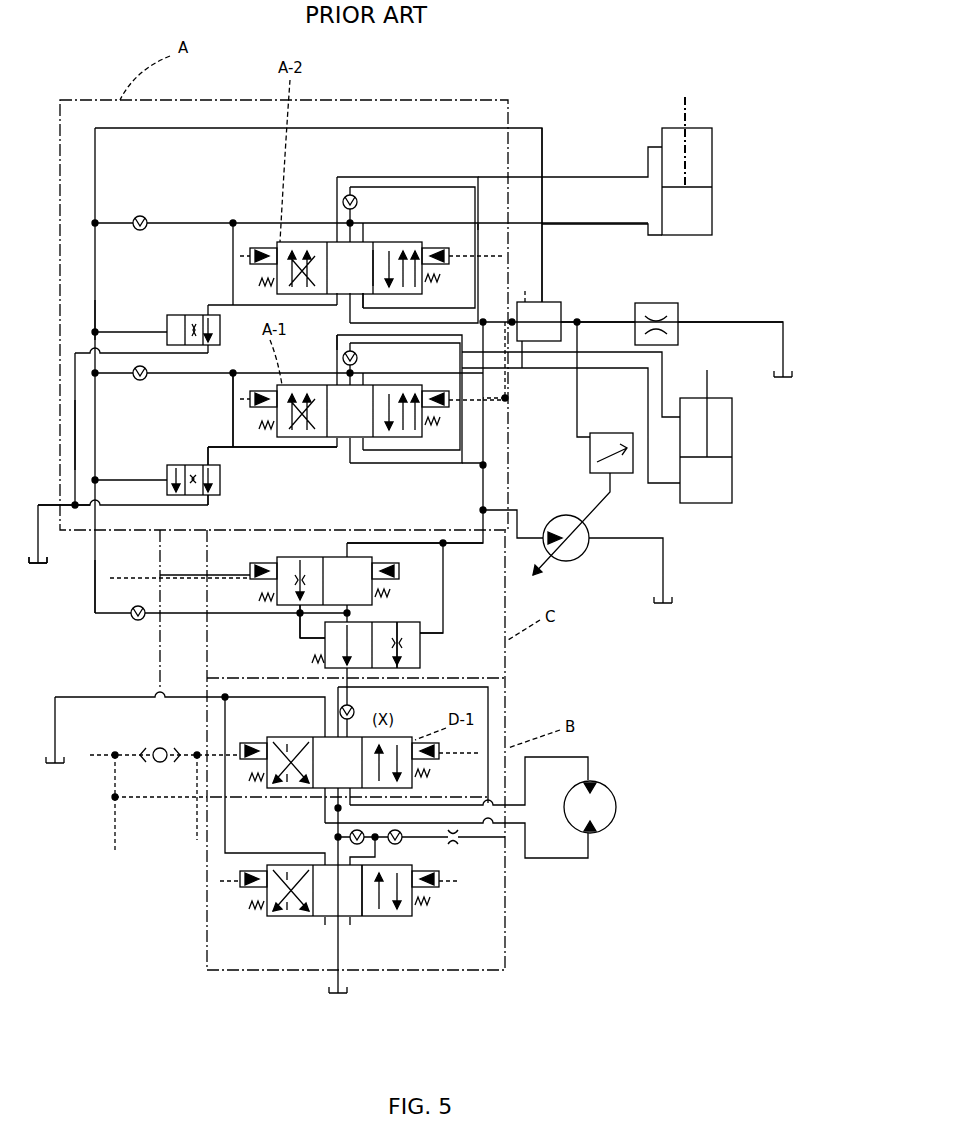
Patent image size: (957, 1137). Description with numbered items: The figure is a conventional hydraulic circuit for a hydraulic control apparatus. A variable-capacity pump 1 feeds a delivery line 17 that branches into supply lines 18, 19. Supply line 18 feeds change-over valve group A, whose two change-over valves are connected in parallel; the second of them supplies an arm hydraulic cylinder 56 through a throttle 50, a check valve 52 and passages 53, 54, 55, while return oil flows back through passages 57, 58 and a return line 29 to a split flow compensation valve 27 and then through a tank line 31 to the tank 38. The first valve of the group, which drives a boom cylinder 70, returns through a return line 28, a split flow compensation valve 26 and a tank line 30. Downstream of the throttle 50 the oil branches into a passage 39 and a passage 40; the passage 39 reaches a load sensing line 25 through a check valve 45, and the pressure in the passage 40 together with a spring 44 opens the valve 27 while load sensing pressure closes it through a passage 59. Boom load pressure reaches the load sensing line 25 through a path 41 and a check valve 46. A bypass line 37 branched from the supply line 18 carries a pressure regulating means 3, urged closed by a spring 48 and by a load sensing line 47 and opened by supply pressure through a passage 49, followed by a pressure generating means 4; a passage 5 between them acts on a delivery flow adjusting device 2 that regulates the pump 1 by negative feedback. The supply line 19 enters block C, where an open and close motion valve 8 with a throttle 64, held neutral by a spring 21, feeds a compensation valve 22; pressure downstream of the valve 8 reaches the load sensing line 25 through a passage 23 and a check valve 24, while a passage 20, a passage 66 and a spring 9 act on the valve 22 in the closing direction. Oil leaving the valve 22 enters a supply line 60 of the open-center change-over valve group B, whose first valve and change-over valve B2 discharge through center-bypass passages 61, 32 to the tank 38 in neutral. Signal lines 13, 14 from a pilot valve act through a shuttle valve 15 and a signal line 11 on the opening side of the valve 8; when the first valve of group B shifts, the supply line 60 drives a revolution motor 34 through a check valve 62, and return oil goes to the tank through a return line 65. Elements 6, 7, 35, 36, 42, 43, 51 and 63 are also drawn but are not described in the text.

The variable-capacity pump 1 is at (568, 563).
The delivery flow adjusting device 2 is at (615, 433).
The pressure regulating means 3 is at (565, 300).
The pressure generating means 4 is at (672, 303).
The passage 5 is at (590, 412).
The pilot line 6 is at (498, 418).
The directional control valve 7 is at (250, 400).
The open and close motion valve 8 is at (290, 557).
The spring 9 is at (315, 660).
The signal line 11 is at (125, 578).
The signal line 13 is at (508, 720).
The signal line 14 is at (195, 845).
The shuttle valve 15 is at (158, 765).
The delivery line 17 is at (517, 530).
The supply line 18 is at (480, 318).
The supply line 19 is at (447, 555).
The passage 20 is at (440, 635).
The spring 21 is at (400, 590).
The compensation valve 22 is at (422, 660).
The passage 23 is at (210, 600).
The check valve 24 is at (132, 620).
The load sensing line 25 is at (75, 430).
The split flow compensation valve 26 is at (180, 463).
The split flow compensation valve 27 is at (185, 314).
The return line 28 is at (248, 455).
The return line 29 is at (275, 295).
The tank line 30 is at (110, 520).
The tank line 31 is at (93, 332).
The center-bypass passage 32 is at (336, 930).
The revolution motor 34 is at (617, 815).
The check valve 35 is at (365, 368).
The line 36 is at (340, 336).
The bypass line 37 is at (605, 322).
The tank 38 is at (40, 568).
The passage 39 is at (175, 222).
The passage 40 is at (250, 270).
The path 41 is at (337, 372).
The line 42 is at (232, 420).
The line 43 is at (222, 500).
The spring 44 is at (305, 340).
The check valve 45 is at (140, 214).
The check valve 46 is at (138, 381).
The load sensing line 47 is at (545, 250).
The spring 48 is at (527, 288).
The passage 49 is at (508, 398).
The throttle 50 is at (358, 200).
The line 51 is at (395, 440).
The check valve 52 is at (390, 177).
The passage 53 is at (475, 210).
The passage 54 is at (410, 268).
The passage 55 is at (560, 224).
The arm hydraulic cylinder 56 is at (714, 225).
The passage 57 is at (560, 177).
The passage 58 is at (400, 292).
The passage 59 is at (93, 322).
The supply line 60 is at (322, 706).
The center-bypass passage 61 is at (322, 812).
The check valve 62 is at (357, 712).
The orifice 63 is at (465, 840).
The throttle 64 is at (292, 575).
The return line 65 is at (222, 695).
The passage 66 is at (298, 625).
The boom cylinder 70 is at (734, 478).
The change-over valve B-2 B2 is at (385, 920).